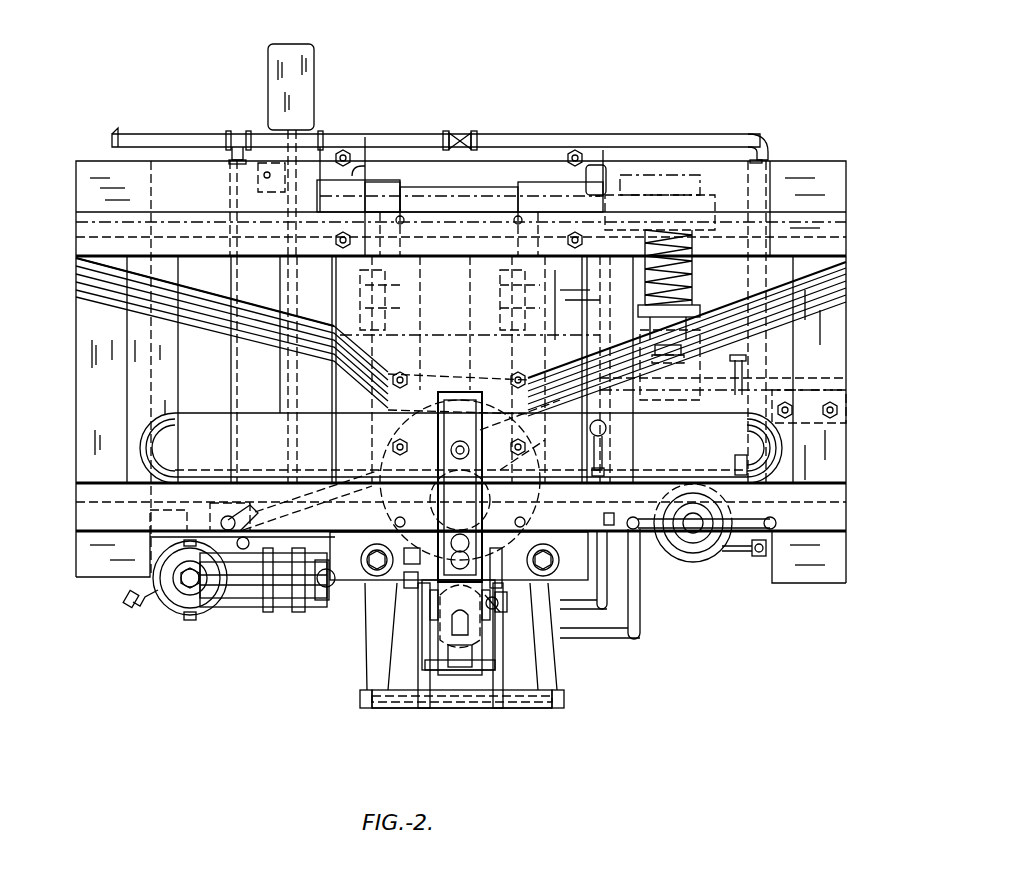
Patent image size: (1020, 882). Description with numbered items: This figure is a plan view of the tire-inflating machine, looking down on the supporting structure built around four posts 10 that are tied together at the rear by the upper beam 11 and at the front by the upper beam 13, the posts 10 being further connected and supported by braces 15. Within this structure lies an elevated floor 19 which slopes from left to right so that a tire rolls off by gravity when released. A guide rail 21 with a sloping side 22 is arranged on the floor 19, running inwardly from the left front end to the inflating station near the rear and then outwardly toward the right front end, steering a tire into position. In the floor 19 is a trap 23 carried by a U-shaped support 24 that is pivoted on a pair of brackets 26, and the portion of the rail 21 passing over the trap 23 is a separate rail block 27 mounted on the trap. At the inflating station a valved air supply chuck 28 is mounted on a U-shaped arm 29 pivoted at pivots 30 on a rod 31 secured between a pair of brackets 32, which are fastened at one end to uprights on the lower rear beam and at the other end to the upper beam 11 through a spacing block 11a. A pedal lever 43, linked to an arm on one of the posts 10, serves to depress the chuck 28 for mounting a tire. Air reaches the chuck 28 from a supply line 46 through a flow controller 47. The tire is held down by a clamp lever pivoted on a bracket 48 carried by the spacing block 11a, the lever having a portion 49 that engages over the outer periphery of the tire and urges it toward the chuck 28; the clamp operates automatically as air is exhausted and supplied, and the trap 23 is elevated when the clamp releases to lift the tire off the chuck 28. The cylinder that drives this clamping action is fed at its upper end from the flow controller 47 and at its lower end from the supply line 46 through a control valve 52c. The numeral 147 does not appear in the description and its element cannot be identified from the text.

The post 10 is at (92, 185).
The upper beam 13 is at (198, 222).
The supply line 46 is at (150, 134).
The pedal lever 43 is at (290, 152).
The bracket 26 is at (330, 150).
The U-shaped support 24 is at (378, 195).
The sloping side 22 is at (105, 292).
The floor 19 is at (157, 366).
The guide rail 21 is at (253, 323).
The trap 23 is at (342, 302).
The brace 15 is at (503, 298).
The rail block 27 is at (560, 348).
The portion of clamp lever 49 is at (470, 395).
The flow controller 47 is at (705, 420).
The valved air supply chuck 28 is at (500, 456).
The motor 147 is at (160, 606).
The spacing block 11a is at (325, 590).
The upper beam 11 is at (362, 545).
The control valve 52c is at (732, 548).
The U-shaped arm 29 is at (426, 668).
The bracket 48 is at (500, 615).
The bracket 32 is at (370, 682).
The pivot 30 is at (425, 708).
The rod 31 is at (455, 708).